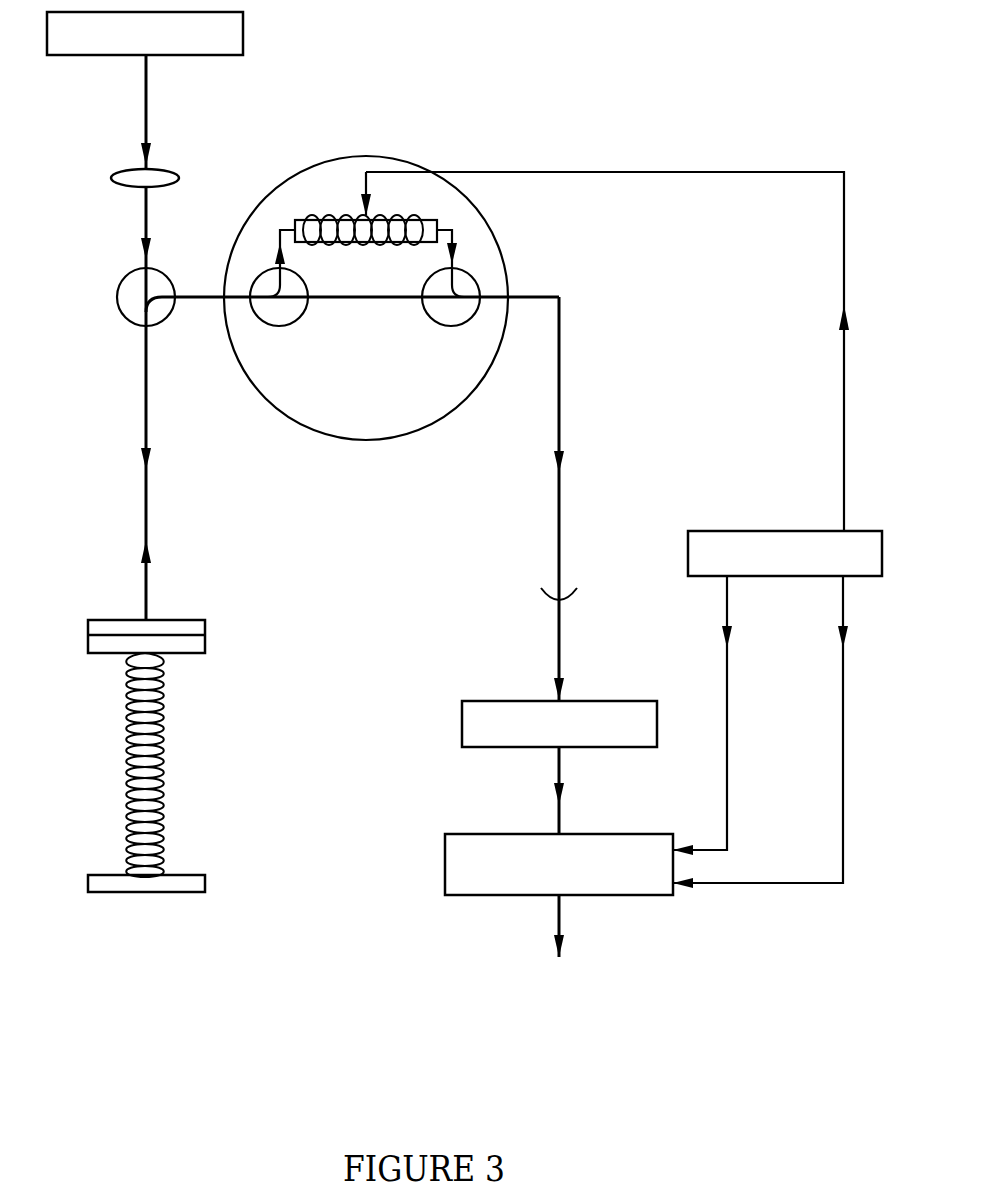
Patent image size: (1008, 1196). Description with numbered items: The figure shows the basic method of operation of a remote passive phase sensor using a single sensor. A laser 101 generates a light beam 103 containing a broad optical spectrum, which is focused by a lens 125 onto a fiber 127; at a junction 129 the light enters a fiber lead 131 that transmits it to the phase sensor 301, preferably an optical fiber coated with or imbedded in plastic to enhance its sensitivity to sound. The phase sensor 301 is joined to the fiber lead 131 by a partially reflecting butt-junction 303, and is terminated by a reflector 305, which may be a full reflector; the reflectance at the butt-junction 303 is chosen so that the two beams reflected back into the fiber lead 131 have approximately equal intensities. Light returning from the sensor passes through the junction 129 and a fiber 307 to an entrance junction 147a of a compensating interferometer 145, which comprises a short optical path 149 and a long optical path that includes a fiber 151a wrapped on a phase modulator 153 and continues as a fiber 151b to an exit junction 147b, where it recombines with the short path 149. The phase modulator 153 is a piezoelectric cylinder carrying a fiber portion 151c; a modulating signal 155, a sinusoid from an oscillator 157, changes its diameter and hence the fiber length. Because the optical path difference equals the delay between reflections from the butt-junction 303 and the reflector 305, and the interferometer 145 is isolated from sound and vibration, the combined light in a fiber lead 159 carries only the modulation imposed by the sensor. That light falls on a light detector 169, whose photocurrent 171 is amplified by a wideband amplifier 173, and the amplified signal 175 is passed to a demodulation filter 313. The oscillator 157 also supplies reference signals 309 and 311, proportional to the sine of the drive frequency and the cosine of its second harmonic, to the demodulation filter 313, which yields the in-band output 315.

The laser 101 is at (245, 32).
The light beam 103 is at (148, 88).
The lens 125 is at (176, 172).
The fiber 127 is at (148, 220).
The junction 129 is at (116, 297).
The fiber lead 131 is at (148, 511).
The compensating interferometer 145 is at (330, 158).
The entrance junction 147a is at (275, 323).
The exit junction 147b is at (452, 323).
The short optical path 149 is at (373, 300).
The fiber 151a is at (292, 234).
The fiber 151b is at (457, 238).
The fiber portion 151c is at (420, 248).
The phase modulator 153 is at (343, 215).
The modulating signal 155 is at (846, 412).
The oscillator 157 is at (866, 531).
The fiber lead 159 is at (562, 356).
The light detector 169 is at (545, 600).
The photocurrent 171 is at (555, 640).
The amplifier 173 is at (458, 722).
The amplified signal 175 is at (556, 820).
The phase sensor 301 is at (155, 812).
The butt-junction 303 is at (205, 620).
The reflector 305 is at (205, 875).
The fiber 307 is at (191, 297).
The reference signal 309 is at (723, 772).
The reference signal 311 is at (843, 808).
The demodulation filter 313 is at (443, 863).
The in-band output 315 is at (560, 910).